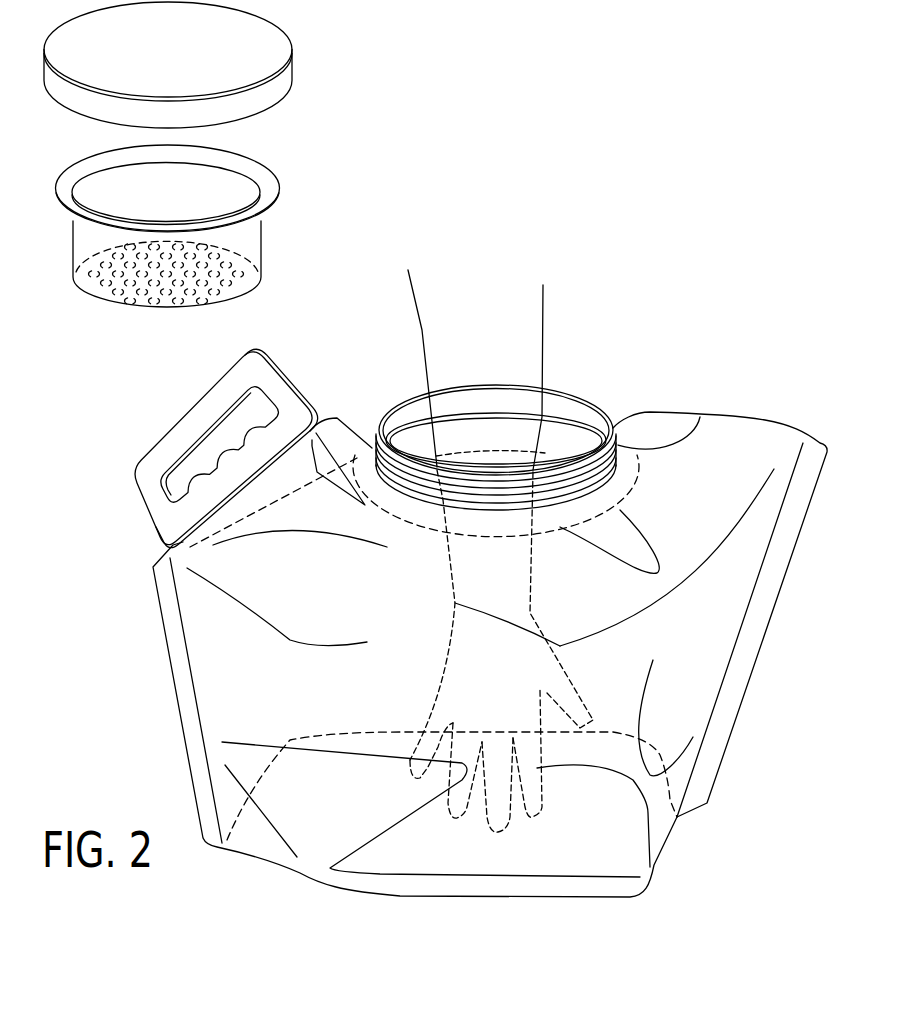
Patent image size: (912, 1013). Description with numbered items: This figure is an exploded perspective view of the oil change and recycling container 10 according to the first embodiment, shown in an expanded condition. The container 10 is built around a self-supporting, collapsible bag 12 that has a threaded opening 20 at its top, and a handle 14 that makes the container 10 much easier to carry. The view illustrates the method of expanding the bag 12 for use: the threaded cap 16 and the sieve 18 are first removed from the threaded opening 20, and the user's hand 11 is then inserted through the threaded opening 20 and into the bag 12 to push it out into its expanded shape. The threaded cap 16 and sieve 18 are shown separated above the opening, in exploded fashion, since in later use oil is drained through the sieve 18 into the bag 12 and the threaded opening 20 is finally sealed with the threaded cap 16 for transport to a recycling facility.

The oil change and recycling container 10 is at (676, 273).
The user's hand 11 is at (542, 347).
The self-supporting, collapsible bag 12 is at (177, 702).
The handle 14 is at (177, 413).
The threaded cap 16 is at (273, 43).
The sieve 18 is at (268, 187).
The threaded opening 20 is at (578, 397).